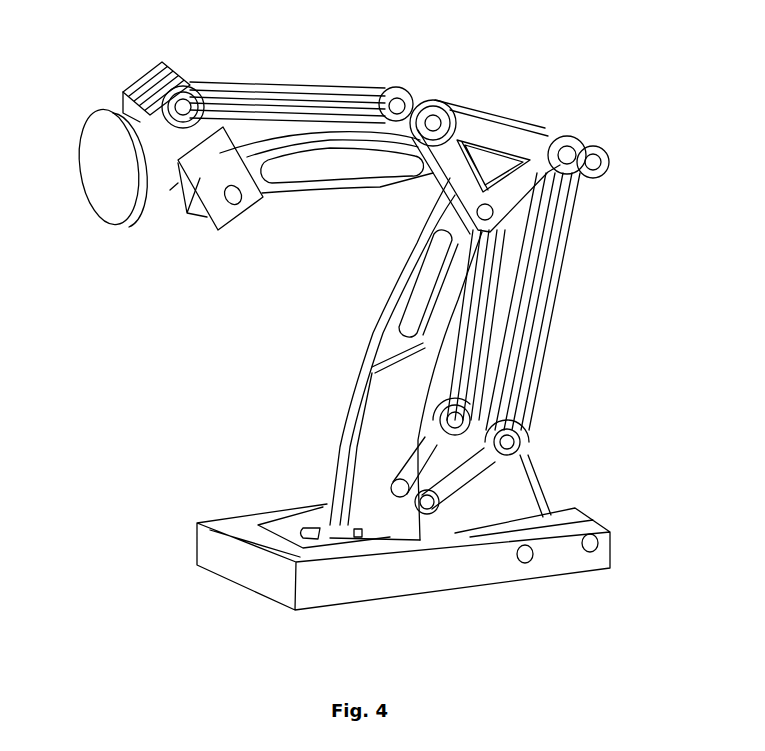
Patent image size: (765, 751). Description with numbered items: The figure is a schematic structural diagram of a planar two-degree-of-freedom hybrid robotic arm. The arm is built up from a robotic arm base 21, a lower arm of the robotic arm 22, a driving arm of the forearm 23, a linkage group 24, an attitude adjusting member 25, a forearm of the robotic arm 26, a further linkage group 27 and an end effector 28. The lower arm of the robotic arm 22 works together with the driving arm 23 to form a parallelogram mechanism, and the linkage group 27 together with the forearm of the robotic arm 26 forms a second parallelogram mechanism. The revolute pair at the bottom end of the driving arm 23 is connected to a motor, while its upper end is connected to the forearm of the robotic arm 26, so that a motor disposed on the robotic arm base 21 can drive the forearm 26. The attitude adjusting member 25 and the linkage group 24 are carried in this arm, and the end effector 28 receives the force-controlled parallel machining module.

The robotic arm base 21 is at (500, 573).
The lower arm of the robotic arm 22 is at (393, 427).
The driving arm of the forearm 23 is at (530, 355).
The linkage group 24 is at (580, 270).
The attitude adjusting member 25 is at (525, 138).
The forearm of the robotic arm 26 is at (393, 185).
The linkage group 27 is at (296, 115).
The end effector 28 is at (173, 137).